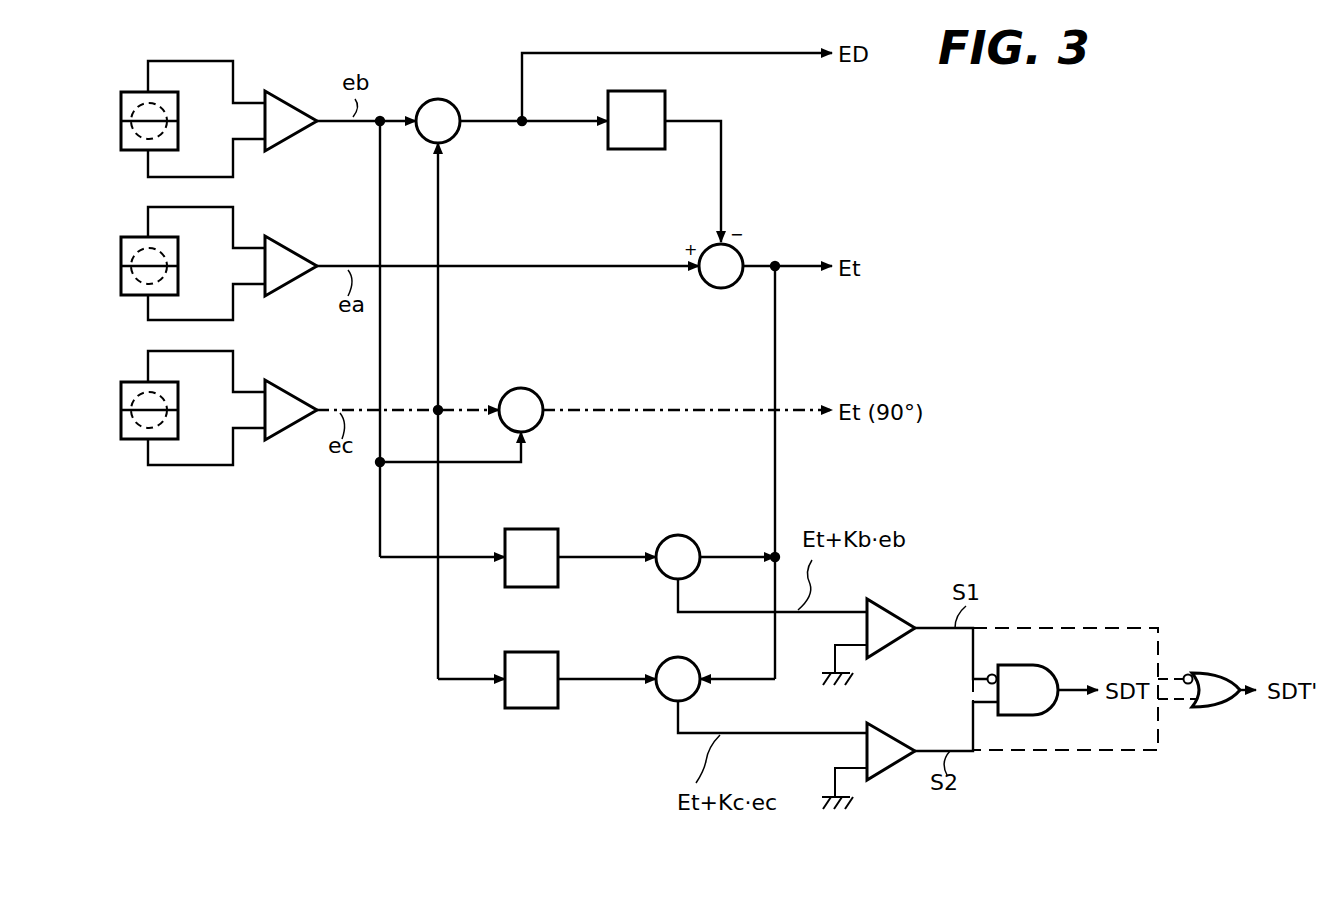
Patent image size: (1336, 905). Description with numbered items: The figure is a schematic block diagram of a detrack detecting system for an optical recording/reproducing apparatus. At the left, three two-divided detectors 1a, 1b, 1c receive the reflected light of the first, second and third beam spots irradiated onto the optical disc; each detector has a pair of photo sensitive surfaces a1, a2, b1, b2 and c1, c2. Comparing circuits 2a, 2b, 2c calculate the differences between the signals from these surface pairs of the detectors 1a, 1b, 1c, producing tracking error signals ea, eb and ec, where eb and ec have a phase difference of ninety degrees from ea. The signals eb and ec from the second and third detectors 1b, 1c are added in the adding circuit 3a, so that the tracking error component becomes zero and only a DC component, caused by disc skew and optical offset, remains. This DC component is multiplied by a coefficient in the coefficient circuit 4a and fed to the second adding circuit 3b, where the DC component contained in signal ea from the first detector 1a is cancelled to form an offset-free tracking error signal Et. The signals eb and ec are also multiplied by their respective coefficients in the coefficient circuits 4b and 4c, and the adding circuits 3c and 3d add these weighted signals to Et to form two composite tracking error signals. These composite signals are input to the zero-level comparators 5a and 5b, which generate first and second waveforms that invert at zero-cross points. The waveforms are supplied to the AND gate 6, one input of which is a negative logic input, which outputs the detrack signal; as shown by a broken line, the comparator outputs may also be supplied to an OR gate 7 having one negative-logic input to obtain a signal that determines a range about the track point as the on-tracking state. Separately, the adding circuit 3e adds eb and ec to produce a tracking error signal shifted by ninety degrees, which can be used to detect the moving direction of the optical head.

The two-divided detector 1a is at (121, 268).
The two-divided detector 1b is at (121, 122).
The two-divided detector 1c is at (121, 418).
The photo sensitive surface a1 is at (128, 240).
The photo sensitive surface a2 is at (126, 290).
The photo sensitive surface b1 is at (128, 95).
The photo sensitive surface b2 is at (128, 148).
The photo sensitive surface c1 is at (128, 390).
The photo sensitive surface c2 is at (130, 435).
The comparing circuit 2a is at (296, 257).
The comparing circuit 2b is at (296, 112).
The comparing circuit 2c is at (296, 402).
The adding circuit 3a is at (452, 100).
The adding circuit 3b is at (706, 282).
The adding circuit 3c is at (690, 536).
The adding circuit 3d is at (670, 657).
The adding circuit 3e is at (540, 393).
The coefficient circuit 4a is at (668, 96).
The coefficient circuit 4b is at (548, 528).
The coefficient circuit 4c is at (550, 652).
The 0-level comparator 5a is at (892, 620).
The 0-level comparator 5b is at (900, 740).
The AND gate 6 is at (1045, 684).
The OR gate 7 is at (1220, 673).